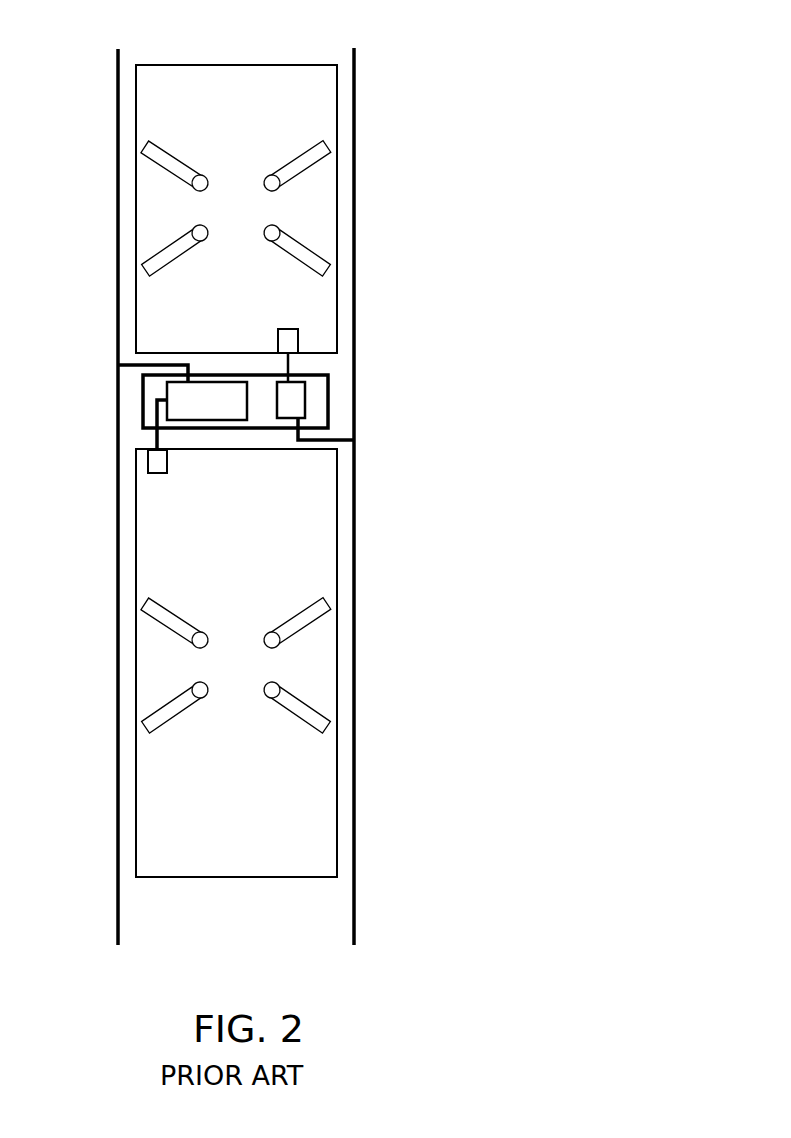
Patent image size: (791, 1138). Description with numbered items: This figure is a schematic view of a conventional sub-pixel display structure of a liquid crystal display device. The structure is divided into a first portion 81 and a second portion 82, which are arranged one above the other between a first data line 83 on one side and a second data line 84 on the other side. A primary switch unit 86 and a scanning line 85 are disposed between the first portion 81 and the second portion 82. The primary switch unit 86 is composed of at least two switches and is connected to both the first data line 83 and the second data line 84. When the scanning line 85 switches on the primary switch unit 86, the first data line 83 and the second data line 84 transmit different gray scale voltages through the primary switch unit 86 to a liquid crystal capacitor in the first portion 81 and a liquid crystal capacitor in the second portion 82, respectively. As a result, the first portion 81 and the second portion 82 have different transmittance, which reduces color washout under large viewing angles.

The first portion 81 is at (338, 172).
The second portion 82 is at (338, 530).
The first data line 83 is at (117, 117).
The second data line 84 is at (356, 86).
The scanning line 85 is at (330, 395).
The primary switch unit 86 is at (155, 390).